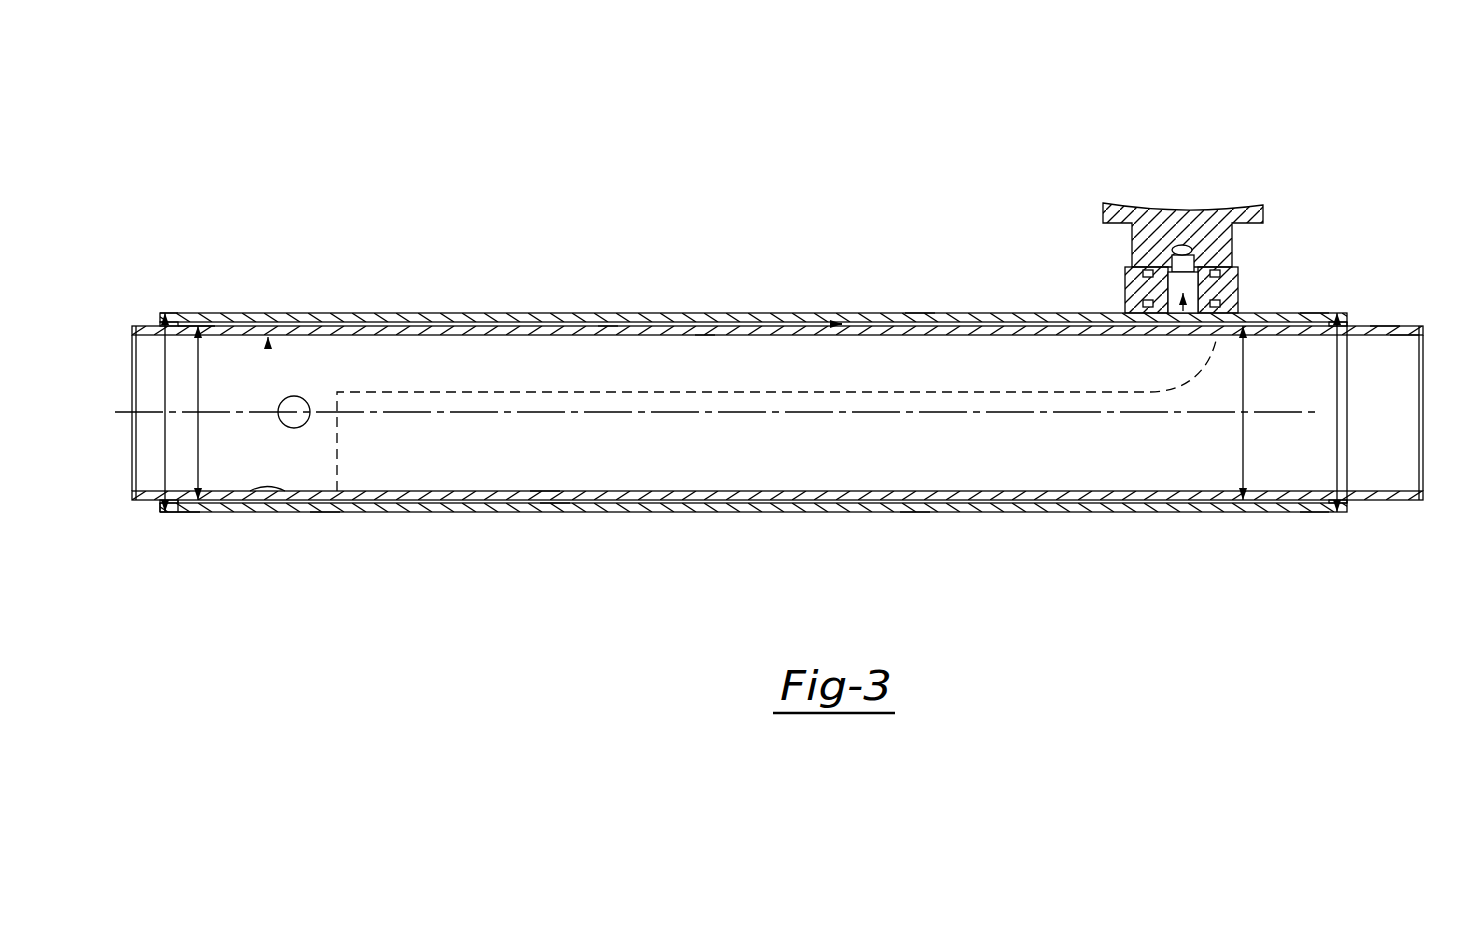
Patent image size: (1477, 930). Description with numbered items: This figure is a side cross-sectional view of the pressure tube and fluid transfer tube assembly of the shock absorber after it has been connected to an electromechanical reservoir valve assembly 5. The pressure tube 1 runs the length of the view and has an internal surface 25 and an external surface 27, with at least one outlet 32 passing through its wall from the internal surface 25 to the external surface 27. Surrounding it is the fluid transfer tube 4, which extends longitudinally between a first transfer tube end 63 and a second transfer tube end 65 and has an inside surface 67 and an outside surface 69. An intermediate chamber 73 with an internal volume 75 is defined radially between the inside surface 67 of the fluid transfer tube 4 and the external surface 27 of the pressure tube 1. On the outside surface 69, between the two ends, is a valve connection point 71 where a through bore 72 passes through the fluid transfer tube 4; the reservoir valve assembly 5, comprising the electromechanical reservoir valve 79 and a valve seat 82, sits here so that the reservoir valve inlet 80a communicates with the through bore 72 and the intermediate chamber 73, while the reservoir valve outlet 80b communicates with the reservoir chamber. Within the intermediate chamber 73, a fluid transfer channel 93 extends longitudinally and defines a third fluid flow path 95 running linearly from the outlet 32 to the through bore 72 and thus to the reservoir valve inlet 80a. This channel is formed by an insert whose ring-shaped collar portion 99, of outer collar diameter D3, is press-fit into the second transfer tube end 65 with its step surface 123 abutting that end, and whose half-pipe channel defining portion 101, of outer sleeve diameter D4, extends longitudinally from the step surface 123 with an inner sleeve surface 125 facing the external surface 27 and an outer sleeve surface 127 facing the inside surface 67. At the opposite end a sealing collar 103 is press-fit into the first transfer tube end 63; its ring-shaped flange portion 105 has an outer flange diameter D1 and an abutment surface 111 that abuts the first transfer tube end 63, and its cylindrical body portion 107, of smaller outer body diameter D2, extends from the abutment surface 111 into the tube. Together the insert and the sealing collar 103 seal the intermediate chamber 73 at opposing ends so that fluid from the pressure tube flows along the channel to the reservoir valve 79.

The pressure tube 1 is at (1398, 504).
The fluid transfer tube 4 is at (433, 313).
The reservoir valve assembly 5 is at (1279, 109).
The internal surface 25 is at (1399, 338).
The external surface 27 is at (1384, 324).
The outlet 32 is at (267, 348).
The first transfer tube end 63 is at (166, 513).
The second transfer tube end 65 is at (1315, 313).
The inside surface 67 is at (949, 337).
The outside surface 69 is at (921, 311).
The valve connection point 71 is at (1120, 308).
The through bore 72 is at (1214, 299).
The intermediate chamber 73 is at (705, 335).
The internal volume 75 is at (323, 513).
The reservoir valve 79 is at (1102, 200).
The reservoir valve inlet 80a is at (1150, 270).
The reservoir valve outlet 80b is at (1190, 245).
The valve seat 82 is at (1232, 290).
The fluid transfer channel 93 is at (608, 326).
The third fluid flow path 95 is at (768, 326).
The collar portion 99 is at (1347, 313).
The channel defining portion 101 is at (915, 513).
The sealing collar 103 is at (181, 529).
The flange portion 105 is at (166, 318).
The body portion 107 is at (200, 326).
The abutment surface 111 is at (197, 507).
The step surface 123 is at (1312, 512).
The inner sleeve surface 125 is at (544, 491).
The outer sleeve surface 127 is at (557, 504).
The outer flange diameter D1 is at (165, 378).
The outer body diameter D2 is at (199, 395).
The outer collar diameter D3 is at (1337, 390).
The outer sleeve diameter D4 is at (1243, 462).